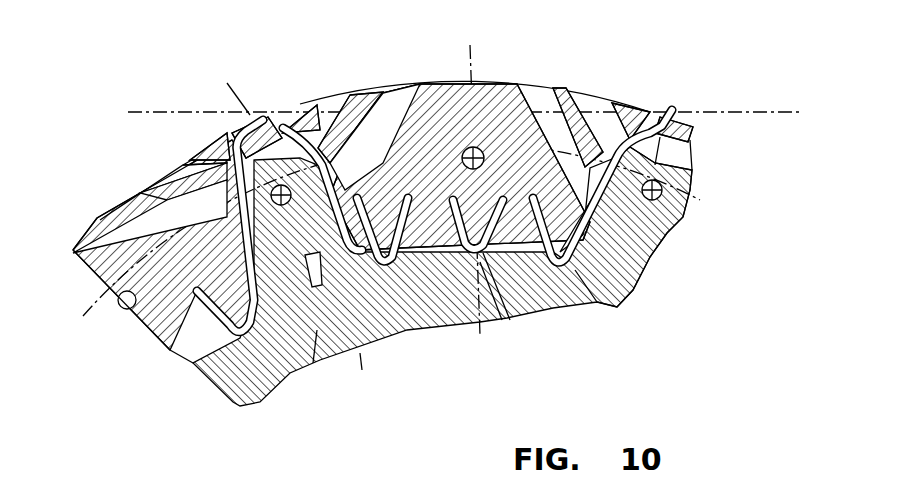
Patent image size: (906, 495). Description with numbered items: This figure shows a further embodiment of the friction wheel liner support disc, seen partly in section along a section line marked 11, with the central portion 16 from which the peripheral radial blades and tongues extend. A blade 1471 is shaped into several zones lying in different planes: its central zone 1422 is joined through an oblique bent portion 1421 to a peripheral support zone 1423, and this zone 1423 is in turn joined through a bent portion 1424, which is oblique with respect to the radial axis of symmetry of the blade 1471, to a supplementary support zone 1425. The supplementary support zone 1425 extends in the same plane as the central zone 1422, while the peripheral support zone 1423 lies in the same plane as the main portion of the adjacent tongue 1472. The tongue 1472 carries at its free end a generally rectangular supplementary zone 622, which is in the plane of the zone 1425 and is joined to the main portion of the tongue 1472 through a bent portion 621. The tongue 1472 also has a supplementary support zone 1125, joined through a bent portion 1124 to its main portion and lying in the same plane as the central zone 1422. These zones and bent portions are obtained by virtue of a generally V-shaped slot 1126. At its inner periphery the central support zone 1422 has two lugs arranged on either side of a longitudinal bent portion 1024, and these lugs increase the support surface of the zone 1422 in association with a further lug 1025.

The section line 11- 11 is at (162, 57).
The central portion 16 is at (556, 320).
The bent portion 621 is at (250, 178).
The supplementary zone 622 is at (233, 137).
The longitudinal bent portion 1024 is at (190, 350).
The lug 1025 is at (507, 323).
The bent portion 1124 is at (378, 348).
The supplementary support zone 1125 is at (313, 365).
The slot 1126 is at (315, 286).
The oblique bent portion 1421 is at (540, 100).
The central zone 1422 is at (670, 250).
The peripheral support zone 1423 is at (372, 128).
The bent portion 1424 is at (330, 103).
The supplementary support zone 1425 is at (305, 103).
The blade 1471 is at (498, 70).
The tongue 1472 is at (670, 113).